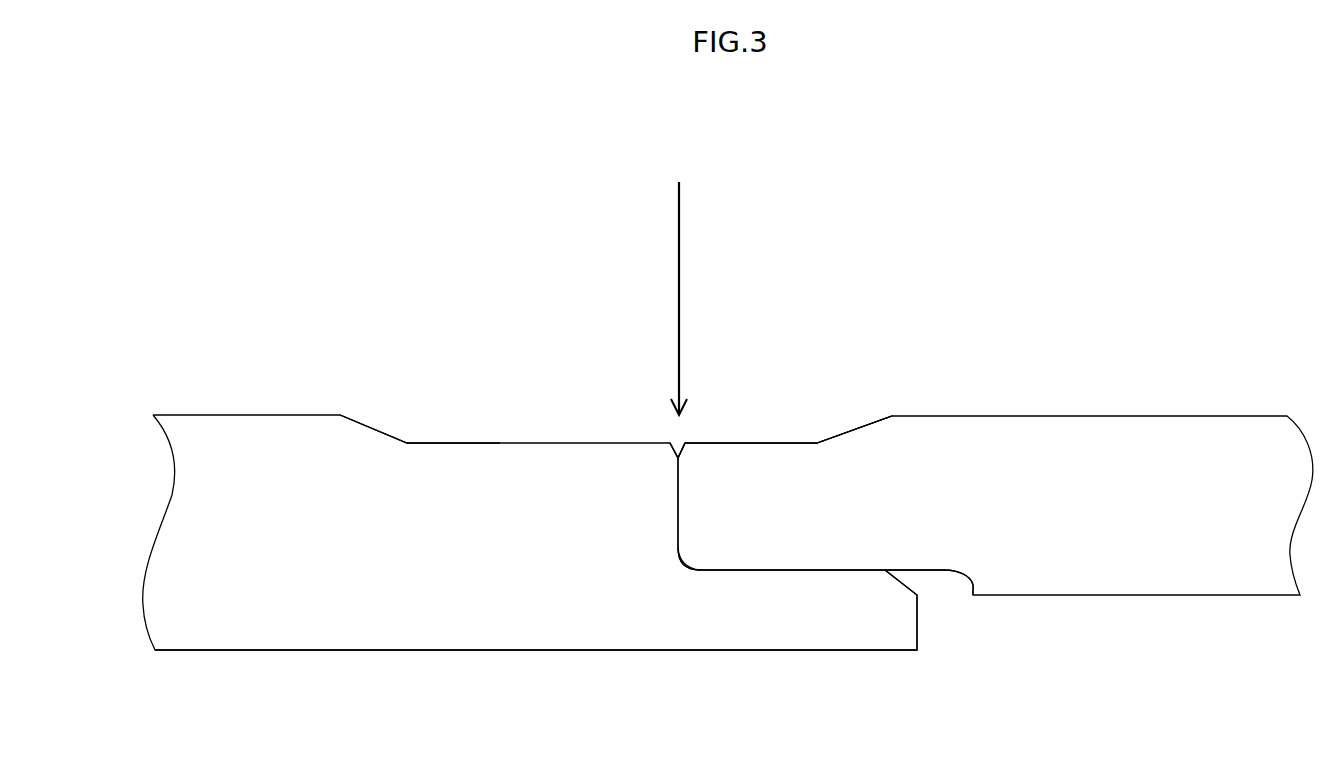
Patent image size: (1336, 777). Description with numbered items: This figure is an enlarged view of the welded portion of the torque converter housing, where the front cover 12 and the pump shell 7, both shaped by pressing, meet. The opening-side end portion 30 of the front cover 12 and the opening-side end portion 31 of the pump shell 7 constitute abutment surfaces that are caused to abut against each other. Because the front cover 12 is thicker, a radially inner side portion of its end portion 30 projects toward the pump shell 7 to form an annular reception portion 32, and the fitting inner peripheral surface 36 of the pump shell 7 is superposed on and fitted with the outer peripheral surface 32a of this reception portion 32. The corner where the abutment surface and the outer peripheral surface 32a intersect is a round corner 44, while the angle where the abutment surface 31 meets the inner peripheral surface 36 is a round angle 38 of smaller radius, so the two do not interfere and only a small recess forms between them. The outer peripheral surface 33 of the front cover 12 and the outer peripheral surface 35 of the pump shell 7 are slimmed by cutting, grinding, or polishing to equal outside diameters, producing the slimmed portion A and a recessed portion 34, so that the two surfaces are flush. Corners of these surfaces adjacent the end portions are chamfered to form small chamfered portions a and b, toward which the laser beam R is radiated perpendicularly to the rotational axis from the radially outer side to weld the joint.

The pump shell 7 is at (1200, 437).
The front cover 12 is at (178, 497).
The opening-side end portion of the front cover 30 is at (680, 486).
The opening-side end portion of the pump shell 31 is at (675, 465).
The reception portion 32 is at (794, 645).
The outer peripheral surface of the reception portion 32a is at (857, 570).
The outer peripheral surface of the front cover 33 is at (425, 443).
The recessed portion 34 is at (773, 416).
The outer peripheral surface of the pump shell 35 is at (790, 443).
The inner peripheral surface 36 is at (940, 573).
The round angle 38 is at (688, 568).
The round corner 44 is at (683, 558).
The small chamfered portion a is at (674, 457).
The small chamfered portion b is at (686, 446).
The portion formed by slimming A is at (819, 382).
The laser beam R is at (679, 252).